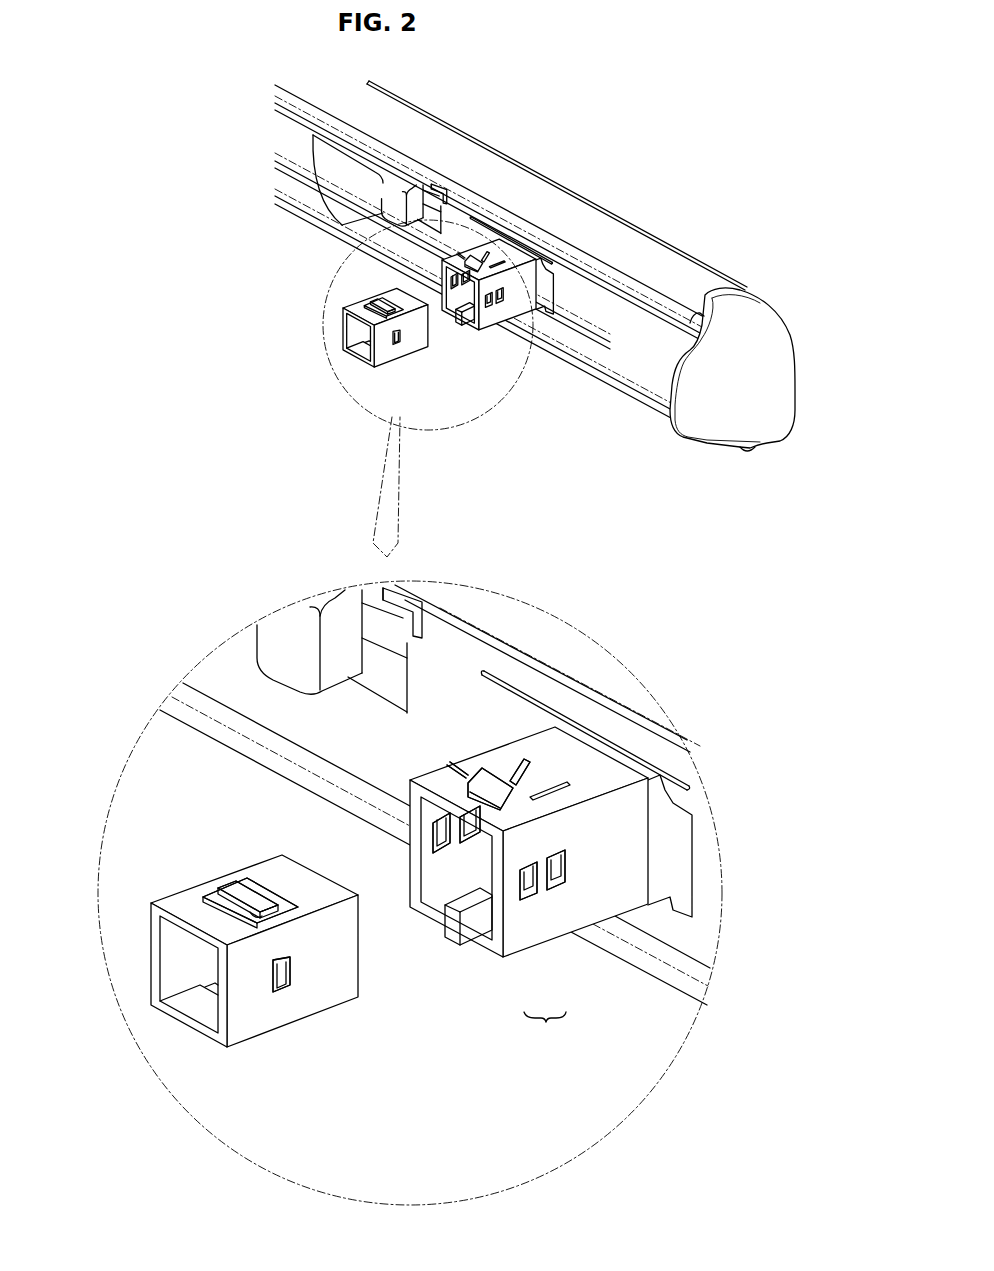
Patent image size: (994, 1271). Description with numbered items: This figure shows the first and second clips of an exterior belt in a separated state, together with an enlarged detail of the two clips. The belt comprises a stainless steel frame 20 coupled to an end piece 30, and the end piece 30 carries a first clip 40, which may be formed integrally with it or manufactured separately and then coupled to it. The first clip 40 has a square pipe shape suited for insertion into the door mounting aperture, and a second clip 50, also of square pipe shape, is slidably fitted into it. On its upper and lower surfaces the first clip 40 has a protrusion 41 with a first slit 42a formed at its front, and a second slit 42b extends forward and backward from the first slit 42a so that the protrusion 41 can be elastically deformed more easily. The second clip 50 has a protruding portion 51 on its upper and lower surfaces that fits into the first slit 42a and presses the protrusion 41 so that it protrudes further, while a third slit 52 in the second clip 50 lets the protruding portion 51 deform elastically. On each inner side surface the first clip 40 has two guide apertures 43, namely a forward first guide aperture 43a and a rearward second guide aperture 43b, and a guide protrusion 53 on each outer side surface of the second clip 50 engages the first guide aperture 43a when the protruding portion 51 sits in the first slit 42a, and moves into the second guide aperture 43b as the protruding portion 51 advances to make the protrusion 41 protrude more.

The stainless steel frame 20 is at (649, 241).
The end piece 30 is at (630, 347).
The first clip 40 is at (497, 318).
The protrusion 41 is at (472, 781).
The first slit 42a is at (467, 790).
The second slit 42b is at (507, 762).
The guide apertures 43 is at (545, 1028).
The first guide aperture 43a is at (525, 898).
The second guide aperture 43b is at (552, 888).
The second clip 50 is at (352, 313).
The protruding portion 51 is at (228, 893).
The third slit 52 is at (258, 878).
The guide protrusion 53 is at (283, 985).